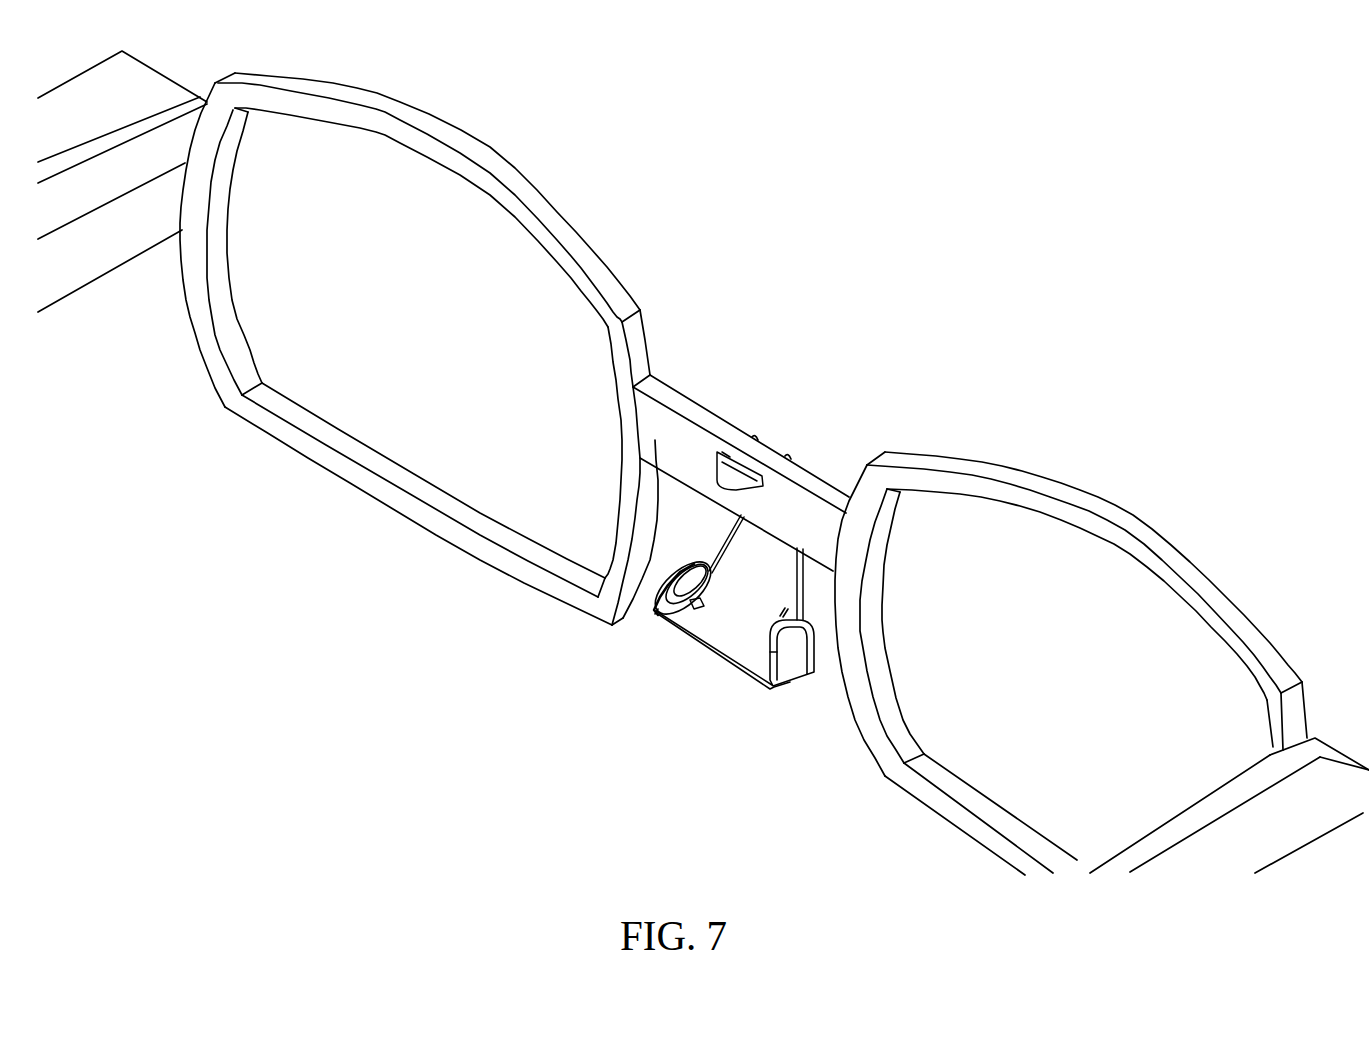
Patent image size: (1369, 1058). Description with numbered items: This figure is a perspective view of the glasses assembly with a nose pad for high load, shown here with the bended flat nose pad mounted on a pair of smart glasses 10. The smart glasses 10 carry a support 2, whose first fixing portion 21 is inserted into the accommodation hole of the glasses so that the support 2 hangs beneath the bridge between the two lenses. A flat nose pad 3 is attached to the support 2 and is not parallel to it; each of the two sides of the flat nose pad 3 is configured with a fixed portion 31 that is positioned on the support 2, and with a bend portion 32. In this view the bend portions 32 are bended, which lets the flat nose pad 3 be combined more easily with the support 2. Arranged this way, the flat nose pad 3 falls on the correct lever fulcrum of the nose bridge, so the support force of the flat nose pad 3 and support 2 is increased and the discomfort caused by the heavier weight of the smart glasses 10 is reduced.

The smart glasses 10 is at (618, 228).
The support 2 is at (817, 620).
The first fixing portion 21 is at (733, 462).
The flat nose pad 3 is at (723, 643).
The fixed portion 31 is at (688, 607).
The bend portion 32 is at (655, 618).